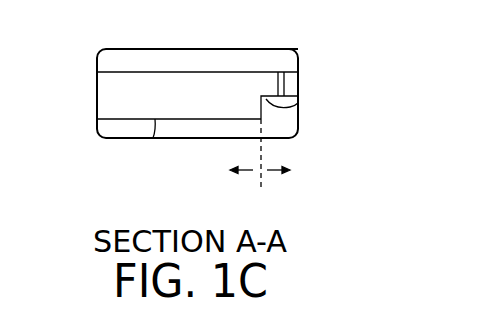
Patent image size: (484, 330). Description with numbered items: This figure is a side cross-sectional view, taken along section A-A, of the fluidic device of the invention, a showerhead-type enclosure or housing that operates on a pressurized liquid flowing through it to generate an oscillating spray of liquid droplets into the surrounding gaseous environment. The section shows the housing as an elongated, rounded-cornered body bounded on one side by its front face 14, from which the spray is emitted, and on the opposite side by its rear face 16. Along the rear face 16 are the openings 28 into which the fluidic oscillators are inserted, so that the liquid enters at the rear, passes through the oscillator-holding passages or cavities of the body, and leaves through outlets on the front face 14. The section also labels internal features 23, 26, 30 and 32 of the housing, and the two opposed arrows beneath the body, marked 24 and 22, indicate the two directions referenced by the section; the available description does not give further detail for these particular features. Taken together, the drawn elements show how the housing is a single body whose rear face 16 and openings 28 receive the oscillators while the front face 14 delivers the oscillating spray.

The front face 14 is at (299, 124).
The rear face 16 is at (97, 60).
The first direction 22 is at (293, 171).
The receptacle 23 is at (287, 110).
The second direction 24 is at (228, 171).
The bottom wall 26 is at (152, 124).
The openings 28 is at (97, 104).
The corner portion 30 is at (281, 63).
The partition 32 is at (288, 86).